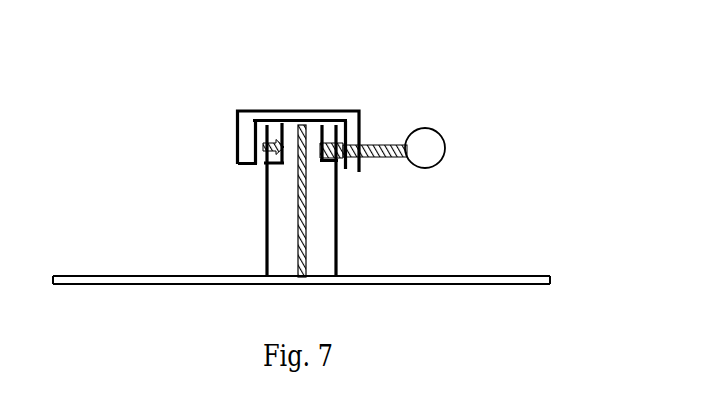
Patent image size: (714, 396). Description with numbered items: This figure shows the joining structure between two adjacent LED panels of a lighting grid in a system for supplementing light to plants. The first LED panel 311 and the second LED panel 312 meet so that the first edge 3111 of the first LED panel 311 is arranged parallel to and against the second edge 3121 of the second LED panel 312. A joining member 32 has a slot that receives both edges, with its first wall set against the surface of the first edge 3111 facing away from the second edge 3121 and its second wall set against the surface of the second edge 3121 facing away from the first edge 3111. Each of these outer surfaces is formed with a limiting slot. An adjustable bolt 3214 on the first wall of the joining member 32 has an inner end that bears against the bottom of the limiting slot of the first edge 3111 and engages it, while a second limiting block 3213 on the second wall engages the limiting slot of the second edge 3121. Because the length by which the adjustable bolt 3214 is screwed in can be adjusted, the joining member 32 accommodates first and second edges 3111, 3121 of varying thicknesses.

The joining member 32 is at (347, 110).
The first LED panel 311 is at (492, 206).
The second LED panel 312 is at (180, 251).
The first edge 3111 is at (328, 200).
The second edge 3121 is at (265, 213).
The second limiting block 3213 is at (268, 145).
The adjustable bolt 3214 is at (428, 150).